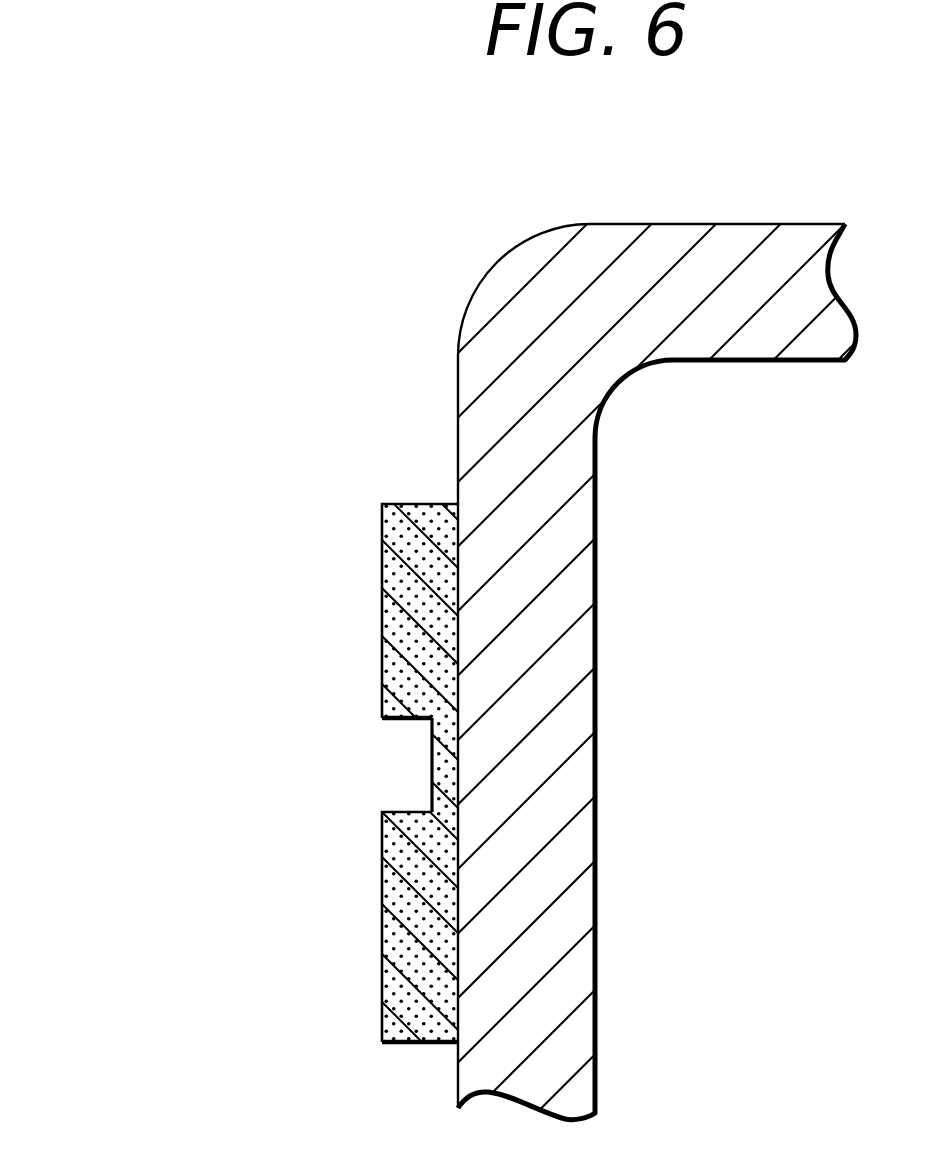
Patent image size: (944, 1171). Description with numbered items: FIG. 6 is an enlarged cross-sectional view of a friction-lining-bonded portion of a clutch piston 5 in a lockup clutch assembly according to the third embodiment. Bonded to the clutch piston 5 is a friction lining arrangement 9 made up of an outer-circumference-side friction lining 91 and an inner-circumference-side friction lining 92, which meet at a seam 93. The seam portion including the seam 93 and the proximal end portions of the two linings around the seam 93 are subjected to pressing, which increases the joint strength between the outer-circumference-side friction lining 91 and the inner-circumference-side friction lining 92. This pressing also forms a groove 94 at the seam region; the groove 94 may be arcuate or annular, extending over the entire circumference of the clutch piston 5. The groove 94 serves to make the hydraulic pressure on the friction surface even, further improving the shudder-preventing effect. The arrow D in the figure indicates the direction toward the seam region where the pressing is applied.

The clutch piston 5 is at (693, 270).
The seal member 9 is at (458, 664).
The outer-circumference-side friction lining 91 is at (412, 632).
The inner-circumference-side friction lining 92 is at (417, 953).
The seam 93 is at (433, 761).
The groove 94 is at (400, 789).
The direction D is at (315, 737).